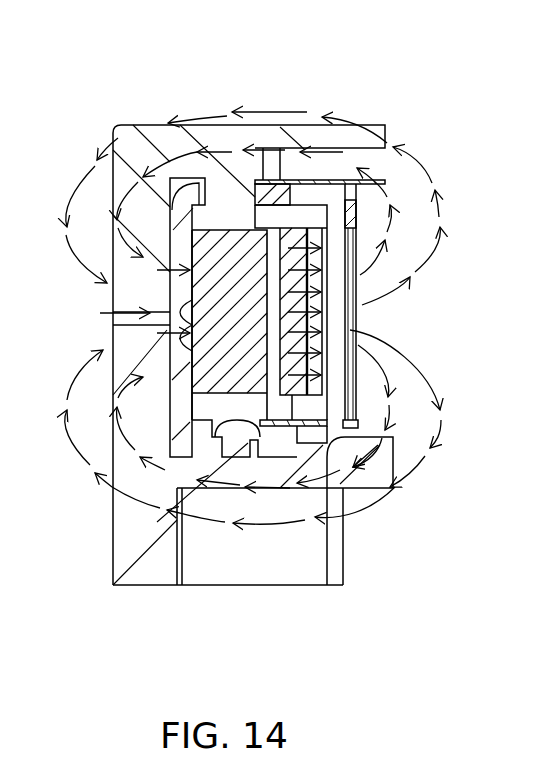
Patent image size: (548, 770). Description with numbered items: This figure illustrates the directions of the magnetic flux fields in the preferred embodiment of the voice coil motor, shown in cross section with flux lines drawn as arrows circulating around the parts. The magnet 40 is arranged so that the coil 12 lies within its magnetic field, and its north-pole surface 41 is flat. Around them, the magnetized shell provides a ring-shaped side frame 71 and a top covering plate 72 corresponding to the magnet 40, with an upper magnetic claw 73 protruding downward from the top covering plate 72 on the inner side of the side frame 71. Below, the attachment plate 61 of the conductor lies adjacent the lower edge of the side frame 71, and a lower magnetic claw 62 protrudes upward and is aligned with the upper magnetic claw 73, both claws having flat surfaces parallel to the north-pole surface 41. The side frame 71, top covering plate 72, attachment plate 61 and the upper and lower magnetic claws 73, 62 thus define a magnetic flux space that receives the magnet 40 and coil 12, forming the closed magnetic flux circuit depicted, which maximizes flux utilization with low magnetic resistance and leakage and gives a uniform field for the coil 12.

The coil 12 is at (292, 237).
The magnet 40 is at (223, 243).
The north-pole surface 41 is at (285, 301).
The attachment plate 61 is at (272, 452).
The lower magnetic claw 62 is at (325, 374).
The side frame 71 is at (182, 413).
The top covering plate 72 is at (280, 190).
The upper magnetic claw 73 is at (332, 268).